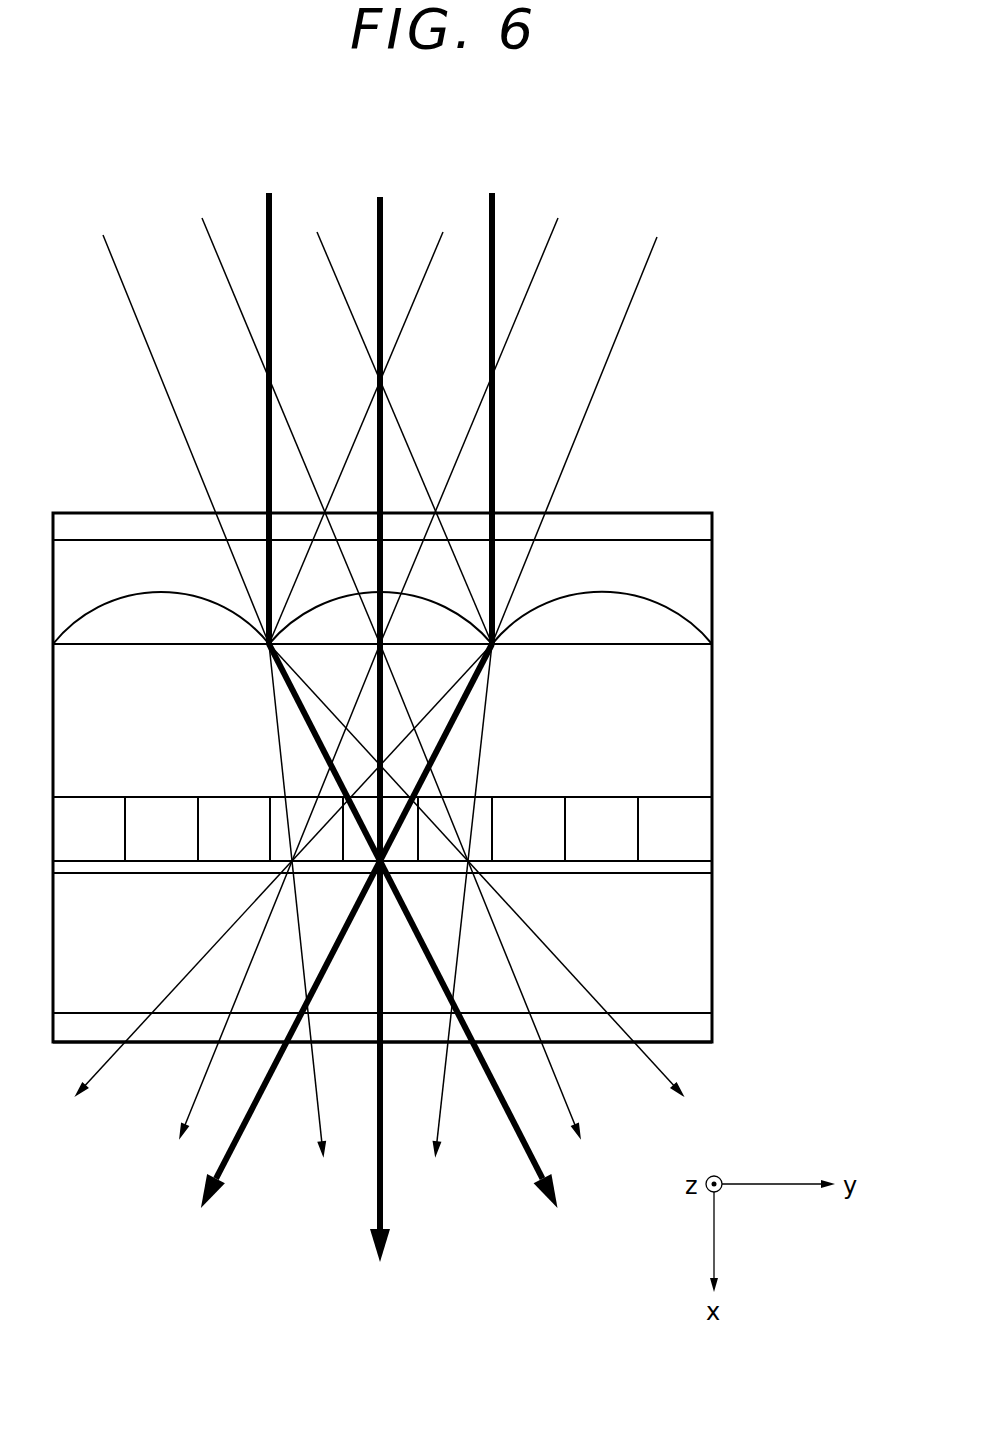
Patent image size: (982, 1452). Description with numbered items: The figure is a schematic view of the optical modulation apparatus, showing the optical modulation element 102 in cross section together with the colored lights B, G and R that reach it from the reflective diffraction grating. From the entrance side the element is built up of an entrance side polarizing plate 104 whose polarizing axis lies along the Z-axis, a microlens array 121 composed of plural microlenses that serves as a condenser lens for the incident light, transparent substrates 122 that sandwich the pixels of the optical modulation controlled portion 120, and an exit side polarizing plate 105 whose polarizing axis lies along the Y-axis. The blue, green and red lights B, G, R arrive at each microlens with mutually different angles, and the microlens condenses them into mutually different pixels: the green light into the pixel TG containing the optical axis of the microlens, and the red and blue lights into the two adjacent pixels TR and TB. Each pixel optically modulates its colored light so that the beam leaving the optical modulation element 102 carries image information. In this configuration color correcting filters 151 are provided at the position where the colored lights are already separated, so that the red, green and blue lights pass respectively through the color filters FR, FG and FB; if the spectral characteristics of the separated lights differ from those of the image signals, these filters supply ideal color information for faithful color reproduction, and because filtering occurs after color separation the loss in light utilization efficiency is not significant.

The optical modulation element 102 is at (800, 1050).
The entrance side polarizing plate 104 is at (693, 528).
The microlens array 121 is at (693, 633).
The transparent substrates 122 is at (693, 725).
The optical modulation controlled portion 120 is at (693, 819).
The color correcting filters 151 is at (693, 866).
The exit side polarizing plate 105 is at (693, 1025).
The blue colored light B is at (307, 153).
The green colored light G is at (492, 182).
The red colored light R is at (453, 153).
The pixel TR is at (277, 804).
The pixel TB is at (484, 804).
The pixel TG is at (400, 869).
The color filter FR is at (274, 873).
The color filter FG is at (356, 869).
The color filter FB is at (480, 870).